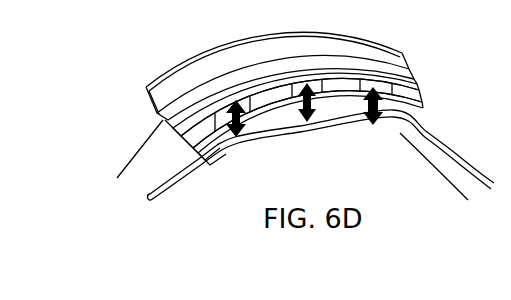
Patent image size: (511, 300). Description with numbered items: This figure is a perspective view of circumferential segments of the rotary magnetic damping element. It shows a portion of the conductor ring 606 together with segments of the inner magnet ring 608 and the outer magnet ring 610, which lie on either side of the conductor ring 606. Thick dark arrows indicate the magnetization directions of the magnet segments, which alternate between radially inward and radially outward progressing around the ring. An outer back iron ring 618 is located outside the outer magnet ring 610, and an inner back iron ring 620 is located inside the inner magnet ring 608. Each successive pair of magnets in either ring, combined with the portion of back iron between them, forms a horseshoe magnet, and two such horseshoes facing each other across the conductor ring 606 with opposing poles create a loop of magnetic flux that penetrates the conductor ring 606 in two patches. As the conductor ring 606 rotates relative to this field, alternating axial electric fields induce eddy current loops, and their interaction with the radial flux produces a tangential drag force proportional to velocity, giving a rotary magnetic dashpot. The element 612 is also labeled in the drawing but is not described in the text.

The conductor ring 606 is at (145, 164).
The inner magnet ring 608 is at (358, 112).
The outer magnet ring 610 is at (383, 75).
The top plate 612 is at (180, 82).
The outer back iron ring 618 is at (420, 82).
The inner back iron ring 620 is at (391, 133).